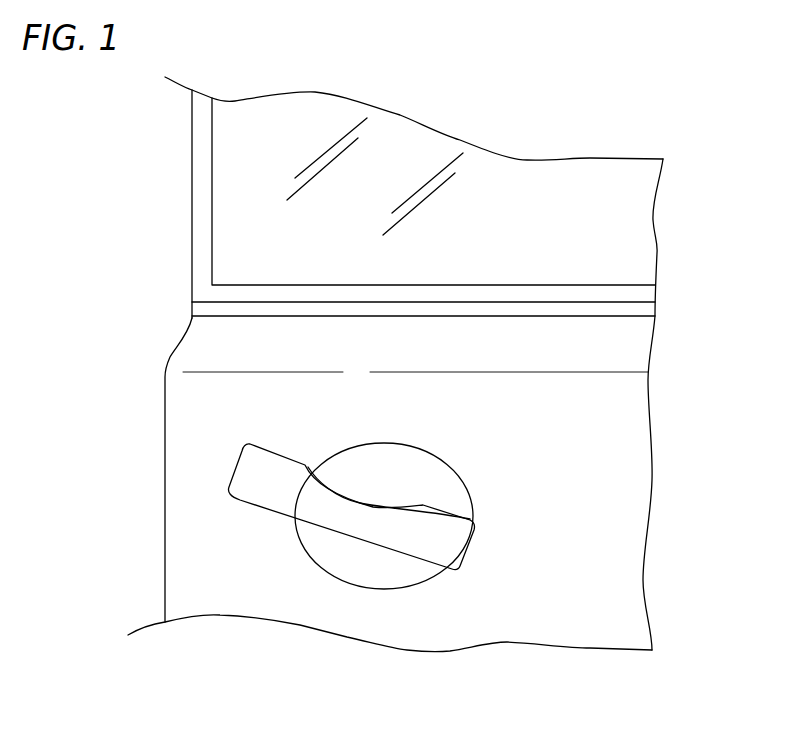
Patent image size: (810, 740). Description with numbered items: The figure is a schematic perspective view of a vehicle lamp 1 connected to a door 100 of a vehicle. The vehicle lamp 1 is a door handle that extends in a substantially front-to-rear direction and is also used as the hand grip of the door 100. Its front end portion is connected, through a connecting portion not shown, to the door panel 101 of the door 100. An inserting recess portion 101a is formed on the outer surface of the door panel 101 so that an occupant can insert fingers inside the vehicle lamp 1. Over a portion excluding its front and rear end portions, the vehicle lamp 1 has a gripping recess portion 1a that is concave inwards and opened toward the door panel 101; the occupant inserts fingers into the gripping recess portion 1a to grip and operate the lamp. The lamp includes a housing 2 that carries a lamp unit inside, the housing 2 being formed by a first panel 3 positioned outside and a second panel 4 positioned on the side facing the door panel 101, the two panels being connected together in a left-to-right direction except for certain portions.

The vehicle lamp 1 is at (373, 530).
The gripping recess portion 1a is at (355, 500).
The housing 2 is at (307, 510).
The first panel 3 is at (345, 520).
The second panel 4 is at (410, 505).
The door 100 is at (630, 508).
The door panel 101 is at (625, 553).
The inserting recess portion 101a is at (338, 473).